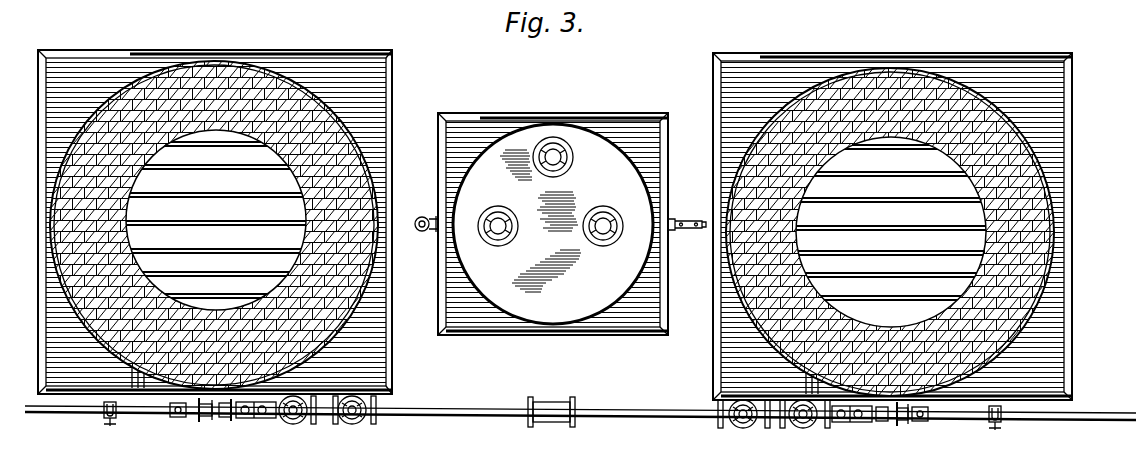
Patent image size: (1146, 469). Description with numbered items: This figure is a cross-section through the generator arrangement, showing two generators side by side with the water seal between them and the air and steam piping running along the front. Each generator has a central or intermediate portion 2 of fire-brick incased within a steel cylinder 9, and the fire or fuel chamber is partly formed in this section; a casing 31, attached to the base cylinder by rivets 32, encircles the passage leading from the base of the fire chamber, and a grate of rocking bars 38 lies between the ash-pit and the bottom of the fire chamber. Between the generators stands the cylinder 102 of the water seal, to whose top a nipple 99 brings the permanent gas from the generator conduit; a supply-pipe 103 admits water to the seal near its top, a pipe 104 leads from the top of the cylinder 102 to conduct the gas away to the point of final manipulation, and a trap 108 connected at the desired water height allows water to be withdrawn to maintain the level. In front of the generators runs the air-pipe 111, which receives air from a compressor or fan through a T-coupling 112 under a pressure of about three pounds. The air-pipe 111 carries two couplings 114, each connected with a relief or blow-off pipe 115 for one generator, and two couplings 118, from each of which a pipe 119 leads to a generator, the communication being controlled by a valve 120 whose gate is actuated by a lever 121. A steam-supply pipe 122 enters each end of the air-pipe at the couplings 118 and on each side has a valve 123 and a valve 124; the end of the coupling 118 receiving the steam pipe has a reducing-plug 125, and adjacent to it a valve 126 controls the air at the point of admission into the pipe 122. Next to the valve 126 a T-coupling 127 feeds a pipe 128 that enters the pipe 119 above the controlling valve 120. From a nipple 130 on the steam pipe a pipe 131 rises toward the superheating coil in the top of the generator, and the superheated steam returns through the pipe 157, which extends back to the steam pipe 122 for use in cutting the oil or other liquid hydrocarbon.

The central or intermediate portion 2 is at (332, 125).
The cylinder 9 is at (396, 200).
The casing 31 is at (285, 376).
The rivets 32 is at (322, 376).
The rocking bars 38 is at (556, 221).
The nipple 99 is at (608, 246).
The cylinder of the water seal 102 is at (568, 256).
The supply-pipe 103 is at (421, 233).
The pipe 104 is at (573, 161).
The trap 108 is at (689, 222).
The air-pipe 111 is at (791, 422).
The T-coupling 112 is at (556, 423).
The couplings 114 is at (720, 429).
The relief or blow-off pipe 115 is at (745, 429).
The couplings 118 is at (828, 429).
The pipe 119 is at (800, 429).
The valve 120 is at (258, 419).
The lever 121 is at (240, 419).
The steam-supply pipe 122 is at (962, 418).
The valve 123 is at (995, 431).
The valve 124 is at (899, 427).
The reducing-plug 125 is at (288, 425).
The valve 126 is at (266, 419).
The T-coupling 127 is at (250, 418).
The pipe 128 is at (840, 423).
The nipple 130 is at (175, 418).
The pipe 131 is at (924, 422).
The pipe 157 is at (881, 422).